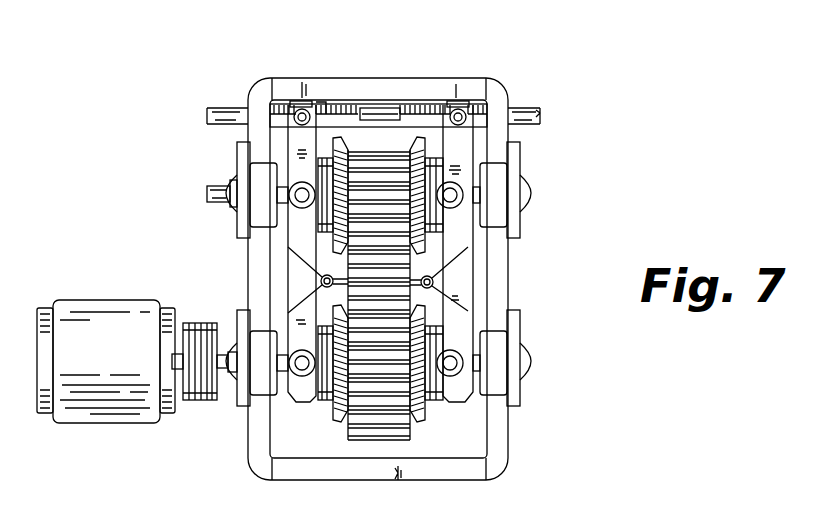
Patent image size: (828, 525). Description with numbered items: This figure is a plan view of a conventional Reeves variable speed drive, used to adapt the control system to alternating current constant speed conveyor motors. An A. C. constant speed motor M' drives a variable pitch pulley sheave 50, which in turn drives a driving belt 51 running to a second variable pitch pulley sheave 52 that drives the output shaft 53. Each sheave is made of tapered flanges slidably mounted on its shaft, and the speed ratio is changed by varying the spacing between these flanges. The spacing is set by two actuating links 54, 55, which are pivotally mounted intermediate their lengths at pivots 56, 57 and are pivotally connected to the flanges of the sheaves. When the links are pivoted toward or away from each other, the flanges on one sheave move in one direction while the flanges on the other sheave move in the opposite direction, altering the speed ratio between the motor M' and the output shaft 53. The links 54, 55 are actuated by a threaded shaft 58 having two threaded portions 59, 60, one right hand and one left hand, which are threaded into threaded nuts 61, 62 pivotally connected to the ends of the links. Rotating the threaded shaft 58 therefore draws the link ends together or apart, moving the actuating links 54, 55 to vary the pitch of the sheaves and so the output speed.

The variable pitch pulley sheave 50 is at (328, 400).
The driving belt 51 is at (378, 402).
The variable pitch pulley sheave 52 is at (353, 150).
The output shaft 53 is at (208, 196).
The actuating link 54 is at (452, 238).
The actuating link 55 is at (298, 238).
The pivot 56 is at (435, 283).
The pivot 57 is at (320, 282).
The threaded shaft 58 is at (372, 112).
The threaded portion 59 is at (318, 104).
The threaded portion 60 is at (416, 110).
The threaded nut 61 is at (300, 108).
The threaded nut 62 is at (462, 108).
The A. C. constant speed motor M' is at (127, 389).